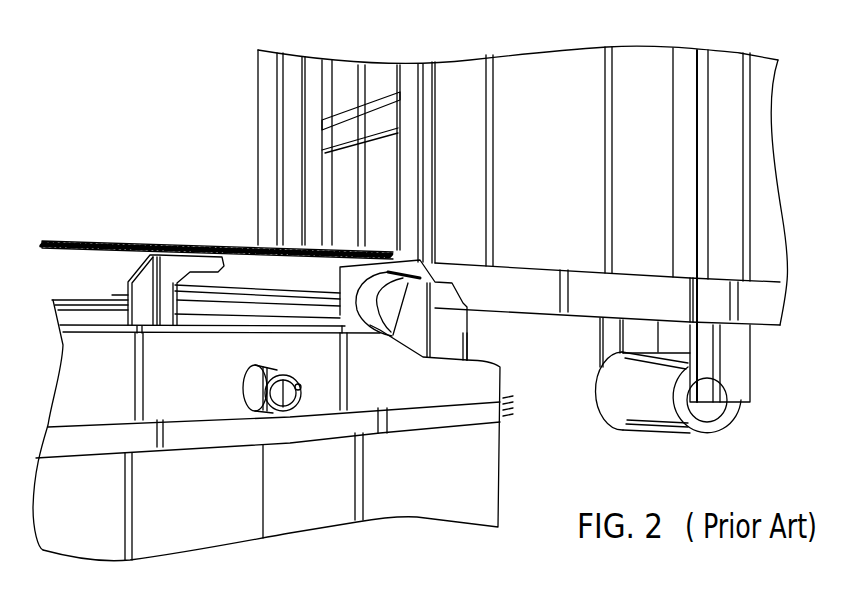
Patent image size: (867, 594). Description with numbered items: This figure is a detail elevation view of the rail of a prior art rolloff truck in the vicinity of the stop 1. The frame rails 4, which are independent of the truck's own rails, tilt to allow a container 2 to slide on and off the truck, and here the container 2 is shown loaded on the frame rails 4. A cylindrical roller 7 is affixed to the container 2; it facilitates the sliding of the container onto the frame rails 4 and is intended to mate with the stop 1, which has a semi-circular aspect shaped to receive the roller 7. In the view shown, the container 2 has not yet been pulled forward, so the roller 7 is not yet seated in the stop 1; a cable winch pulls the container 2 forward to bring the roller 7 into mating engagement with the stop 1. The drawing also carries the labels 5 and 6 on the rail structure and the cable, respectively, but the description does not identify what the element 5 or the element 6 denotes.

The clamp bracket 1 is at (174, 288).
The trailer side wall 2 is at (456, 77).
The lower body / deck structure 4 is at (198, 390).
The side rail 5 is at (128, 439).
The rope / cable 6 is at (175, 242).
The hook 7 is at (402, 268).